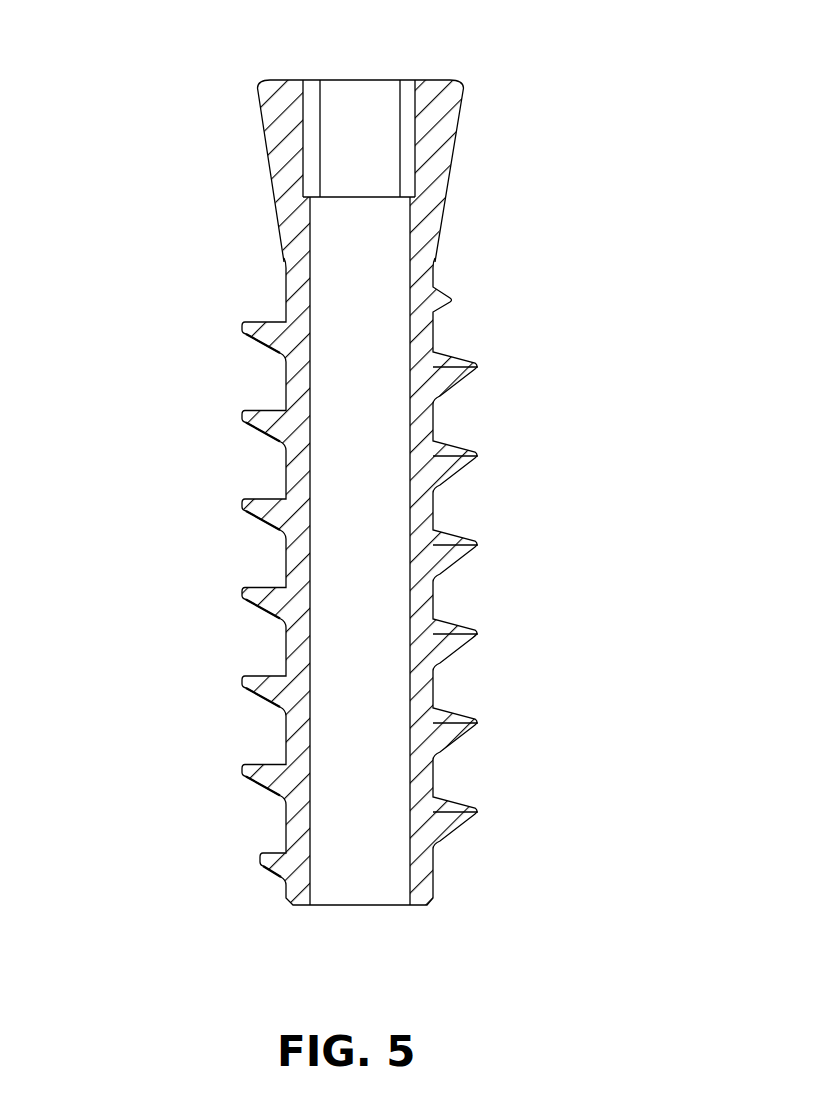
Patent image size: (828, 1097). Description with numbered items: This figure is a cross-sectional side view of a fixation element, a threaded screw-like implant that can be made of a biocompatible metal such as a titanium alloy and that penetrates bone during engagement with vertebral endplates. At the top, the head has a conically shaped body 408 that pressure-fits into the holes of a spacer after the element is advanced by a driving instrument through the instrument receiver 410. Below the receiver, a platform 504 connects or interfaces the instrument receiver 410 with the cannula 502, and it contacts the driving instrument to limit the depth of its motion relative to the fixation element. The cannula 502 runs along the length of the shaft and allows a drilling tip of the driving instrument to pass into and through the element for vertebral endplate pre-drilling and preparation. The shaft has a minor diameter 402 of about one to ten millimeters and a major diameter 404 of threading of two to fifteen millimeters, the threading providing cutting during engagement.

The minor diameter 402 is at (286, 567).
The major diameter 404 is at (478, 637).
The conically shaped body 408 is at (437, 123).
The instrument receiver 410 is at (360, 138).
The cannula 502 is at (362, 844).
The platform 504 is at (330, 197).